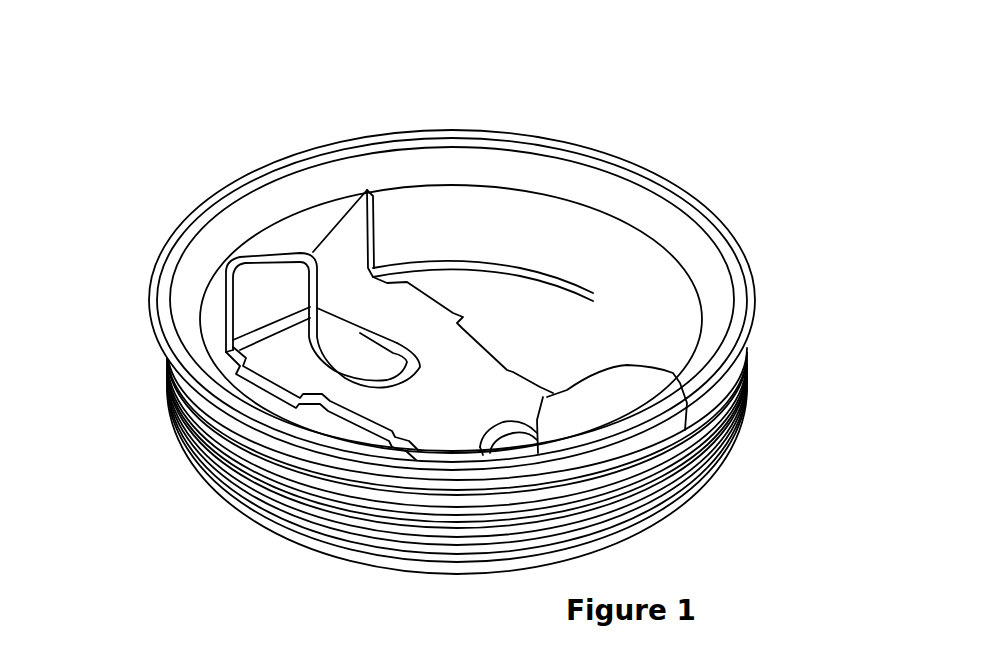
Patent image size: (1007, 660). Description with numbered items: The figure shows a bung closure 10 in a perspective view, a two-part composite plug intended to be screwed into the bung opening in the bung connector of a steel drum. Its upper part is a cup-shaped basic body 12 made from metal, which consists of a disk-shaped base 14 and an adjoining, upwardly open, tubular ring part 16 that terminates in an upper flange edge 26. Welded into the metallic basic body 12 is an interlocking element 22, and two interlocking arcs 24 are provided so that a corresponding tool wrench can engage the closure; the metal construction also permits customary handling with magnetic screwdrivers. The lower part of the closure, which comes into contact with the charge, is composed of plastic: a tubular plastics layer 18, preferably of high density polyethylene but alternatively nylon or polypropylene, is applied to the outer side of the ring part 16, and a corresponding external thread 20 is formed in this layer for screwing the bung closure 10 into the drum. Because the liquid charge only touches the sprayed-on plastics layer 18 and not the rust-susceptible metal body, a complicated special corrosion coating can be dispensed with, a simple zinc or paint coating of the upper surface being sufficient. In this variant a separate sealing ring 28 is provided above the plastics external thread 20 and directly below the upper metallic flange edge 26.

The bung closure 10 is at (690, 146).
The cup-shaped basic body 12 is at (590, 297).
The disk-shaped base 14 is at (502, 317).
The tubular ring part 16 is at (580, 247).
The tubular plastics layer 18 is at (203, 432).
The external thread 20 is at (653, 477).
The interlocking element 22 is at (397, 407).
The interlocking arcs 24 is at (330, 238).
The upper flange edge 26 is at (232, 227).
The sealing ring 28 is at (170, 360).